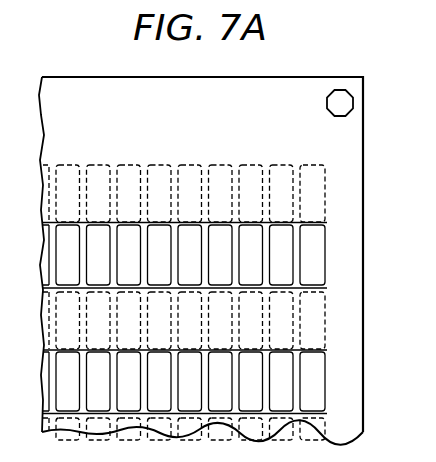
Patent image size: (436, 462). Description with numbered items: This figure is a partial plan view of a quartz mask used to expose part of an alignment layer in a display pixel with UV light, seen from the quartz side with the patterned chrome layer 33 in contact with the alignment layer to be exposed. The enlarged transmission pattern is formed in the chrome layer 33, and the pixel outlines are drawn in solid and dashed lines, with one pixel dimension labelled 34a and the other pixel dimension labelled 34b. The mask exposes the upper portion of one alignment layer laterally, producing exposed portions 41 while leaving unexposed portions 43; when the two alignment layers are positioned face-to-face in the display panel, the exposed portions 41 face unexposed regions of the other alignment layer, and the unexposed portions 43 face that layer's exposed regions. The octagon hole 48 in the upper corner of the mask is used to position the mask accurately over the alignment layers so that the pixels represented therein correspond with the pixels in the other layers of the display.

The chrome layer 33 is at (103, 126).
The unexposed portion 43 is at (248, 173).
The octagon hole 48 is at (327, 103).
The pixel dimension 34a is at (328, 160).
The pixel dimension 34b is at (333, 163).
The exposed portion 41 is at (325, 269).